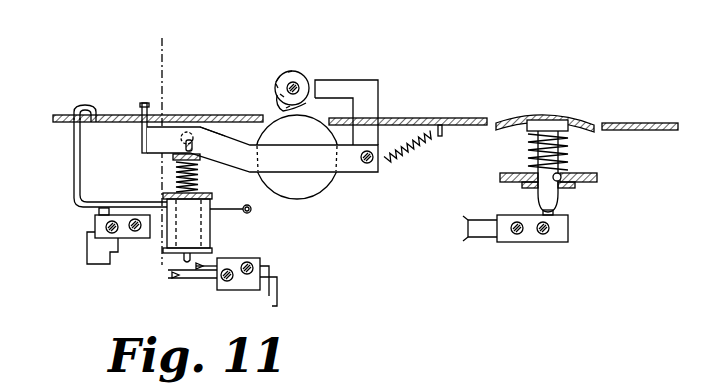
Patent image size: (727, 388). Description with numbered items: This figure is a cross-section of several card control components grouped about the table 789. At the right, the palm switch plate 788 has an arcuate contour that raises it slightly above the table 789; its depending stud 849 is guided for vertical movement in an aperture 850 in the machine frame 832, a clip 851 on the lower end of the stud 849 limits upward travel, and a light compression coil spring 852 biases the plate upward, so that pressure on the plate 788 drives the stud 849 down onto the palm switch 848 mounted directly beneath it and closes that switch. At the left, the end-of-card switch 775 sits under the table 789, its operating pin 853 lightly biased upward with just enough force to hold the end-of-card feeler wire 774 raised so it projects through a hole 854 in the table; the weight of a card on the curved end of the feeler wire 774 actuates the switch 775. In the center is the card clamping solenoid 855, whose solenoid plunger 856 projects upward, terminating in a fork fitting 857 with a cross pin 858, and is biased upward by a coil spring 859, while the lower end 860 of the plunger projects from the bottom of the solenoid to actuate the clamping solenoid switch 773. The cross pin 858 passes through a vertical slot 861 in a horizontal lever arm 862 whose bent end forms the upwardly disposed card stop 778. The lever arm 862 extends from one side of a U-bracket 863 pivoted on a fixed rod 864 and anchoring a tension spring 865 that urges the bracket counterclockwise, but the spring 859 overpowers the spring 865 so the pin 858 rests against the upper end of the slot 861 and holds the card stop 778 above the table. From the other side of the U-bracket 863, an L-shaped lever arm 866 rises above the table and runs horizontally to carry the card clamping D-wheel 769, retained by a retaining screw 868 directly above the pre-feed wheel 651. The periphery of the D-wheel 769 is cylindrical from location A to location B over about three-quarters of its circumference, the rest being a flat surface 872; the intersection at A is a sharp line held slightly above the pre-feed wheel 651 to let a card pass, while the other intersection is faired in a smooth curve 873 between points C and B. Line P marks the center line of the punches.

The pre-feed wheel 651 is at (298, 183).
The card clamping D-wheel 769 is at (307, 80).
The clamping solenoid switch 773 is at (233, 283).
The end-of-card feeler wire 774 is at (84, 106).
The end-of-card switch 775 is at (130, 240).
The card stop 778 is at (141, 104).
The palm switch plate 788 is at (568, 118).
The table 789 is at (648, 122).
The machine frame 832 is at (598, 176).
The palm switch 848 is at (522, 242).
The stud 849 is at (505, 175).
The aperture 850 is at (562, 175).
The clip 851 is at (577, 195).
The compression coil spring 852 is at (530, 150).
The operating pin 853 is at (95, 216).
The hole 854 is at (84, 124).
The card clamping solenoid 855 is at (212, 234).
The solenoid plunger 856 is at (176, 186).
The fork fitting 857 is at (187, 131).
The cross pin 858 is at (198, 128).
The coil spring 859 is at (176, 167).
The lower end of solenoid plunger 860 is at (183, 262).
The vertical slot 861 is at (194, 146).
The horizontal lever arm 862 is at (253, 158).
The U-bracket 863 is at (388, 165).
The fixed rod 864 is at (367, 165).
The tension spring 865 is at (441, 138).
The L-shaped lever arm 866 is at (382, 100).
The retaining screw 868 is at (298, 81).
The flat surface 872 is at (283, 95).
The smooth curve 873 is at (279, 75).
The center line of the punches P is at (165, 46).
The location A is at (289, 106).
The location B is at (290, 71).
The point C is at (276, 85).